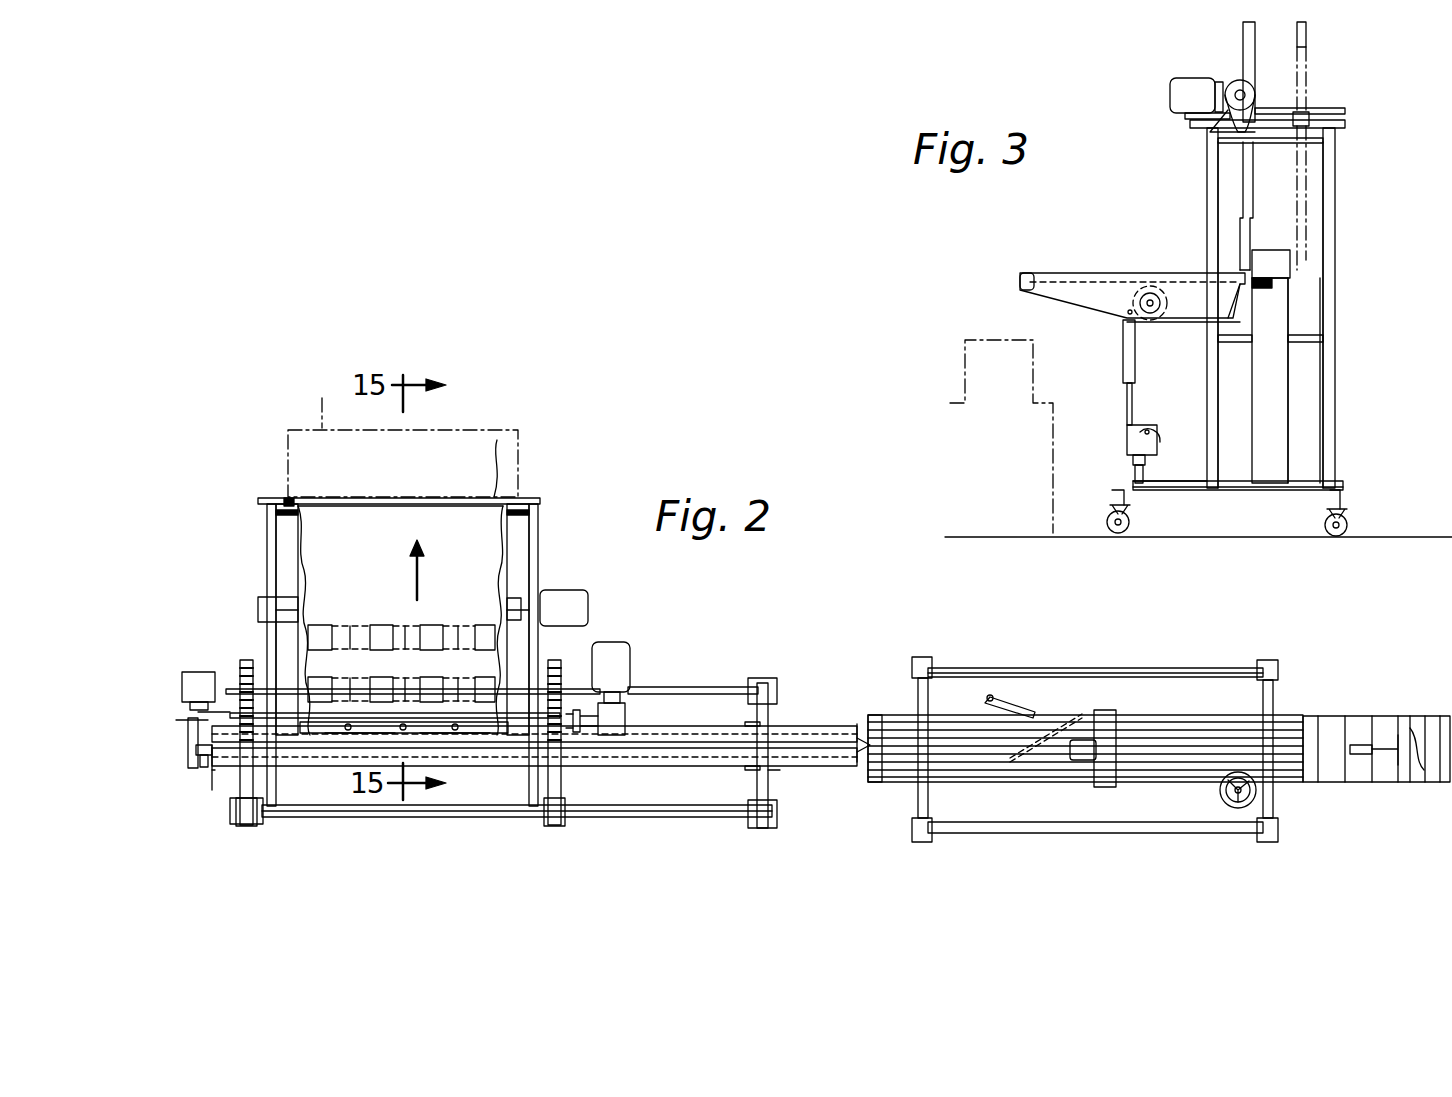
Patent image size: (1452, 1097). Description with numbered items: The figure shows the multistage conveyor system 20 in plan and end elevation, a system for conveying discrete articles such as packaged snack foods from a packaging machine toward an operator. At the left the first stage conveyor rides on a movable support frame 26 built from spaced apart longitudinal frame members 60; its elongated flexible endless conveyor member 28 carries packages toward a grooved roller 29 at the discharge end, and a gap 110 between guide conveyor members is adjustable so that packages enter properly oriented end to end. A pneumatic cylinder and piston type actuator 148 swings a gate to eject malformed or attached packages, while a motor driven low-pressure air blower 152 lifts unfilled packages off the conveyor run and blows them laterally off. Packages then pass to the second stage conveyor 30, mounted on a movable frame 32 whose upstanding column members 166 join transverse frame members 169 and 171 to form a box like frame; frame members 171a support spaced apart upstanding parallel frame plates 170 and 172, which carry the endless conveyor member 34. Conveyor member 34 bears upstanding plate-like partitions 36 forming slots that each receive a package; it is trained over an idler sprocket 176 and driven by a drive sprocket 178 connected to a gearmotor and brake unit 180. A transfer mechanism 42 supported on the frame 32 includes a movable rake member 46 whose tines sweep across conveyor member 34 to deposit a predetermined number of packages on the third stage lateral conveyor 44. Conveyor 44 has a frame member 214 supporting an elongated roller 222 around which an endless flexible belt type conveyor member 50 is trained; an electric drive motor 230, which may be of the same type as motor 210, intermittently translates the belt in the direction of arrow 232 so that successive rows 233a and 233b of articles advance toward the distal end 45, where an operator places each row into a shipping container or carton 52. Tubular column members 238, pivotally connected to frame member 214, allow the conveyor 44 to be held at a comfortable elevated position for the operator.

In FIG. 2, the conveyor system 20 is at (815, 650).
In FIG. 3, the conveyor system 20 is at (1138, 158).
In FIG. 2, the movable support frame 26 is at (1108, 664).
In FIG. 2, the endless conveyor member 28 is at (936, 728).
In FIG. 2, the grooved roller 29 is at (870, 780).
In FIG. 2, the second stage conveyor 30 is at (626, 793).
In FIG. 3, the second stage conveyor 30 is at (1382, 303).
In FIG. 2, the movable frame 32 is at (432, 818).
In FIG. 3, the movable frame 32 is at (1232, 495).
In FIG. 2, the endless conveyor member 34 is at (660, 712).
In FIG. 3, the endless conveyor member 34 is at (1276, 264).
In FIG. 3, the plate-like partitions 36 is at (1262, 248).
In FIG. 2, the transfer mechanism 42 is at (494, 738).
In FIG. 3, the transfer mechanism 42 is at (1232, 58).
In FIG. 2, the third stage lateral conveyor 44 is at (557, 540).
In FIG. 3, the third stage lateral conveyor 44 is at (1101, 272).
In FIG. 2, the distal end 45 is at (518, 497).
In FIG. 3, the distal end 45 is at (1022, 282).
In FIG. 3, the rake member 46 is at (1242, 226).
In FIG. 2, the belt type conveyor member 50 is at (296, 568).
In FIG. 3, the belt type conveyor member 50 is at (1048, 290).
In FIG. 2, the shipping container 52 is at (320, 393).
In FIG. 3, the shipping container 52 is at (955, 356).
In FIG. 2, the longitudinal frame members 60 is at (1180, 662).
In FIG. 2, the gap 110 is at (1422, 745).
In FIG. 2, the pneumatic cylinder and piston type actuator 148 is at (1002, 696).
In FIG. 2, the motor driven low-pressure air blower 152 is at (1078, 762).
In FIG. 3, the upstanding column members 166 is at (1337, 458).
In FIG. 2, the transverse frame members 169 is at (757, 776).
In FIG. 3, the transverse frame members 169 is at (1296, 492).
In FIG. 2, the frame plate 170 is at (714, 730).
In FIG. 3, the frame plate 170 is at (1256, 392).
In FIG. 3, the transverse frame members 171 is at (1310, 170).
In FIG. 3, the frame members 171a is at (1222, 370).
In FIG. 2, the frame plate 172 is at (226, 765).
In FIG. 3, the frame plate 172 is at (1290, 426).
In FIG. 2, the idler sprocket 176 is at (856, 735).
In FIG. 2, the drive sprocket 178 is at (182, 738).
In FIG. 2, the gearmotor and brake unit 180 is at (203, 668).
In FIG. 2, the motor 210 is at (612, 650).
In FIG. 3, the motor 210 is at (1188, 78).
In FIG. 3, the frame member 214 is at (1024, 284).
In FIG. 2, the elongated roller 222 is at (287, 503).
In FIG. 2, the electric drive motor 230 is at (580, 597).
In FIG. 3, the electric drive motor 230 is at (1144, 318).
In FIG. 2, the arrow 232 is at (420, 585).
In FIG. 2, the row of articles 233a is at (330, 618).
In FIG. 2, the row of articles 233b is at (330, 742).
In FIG. 3, the tubular column members 238 is at (1123, 355).